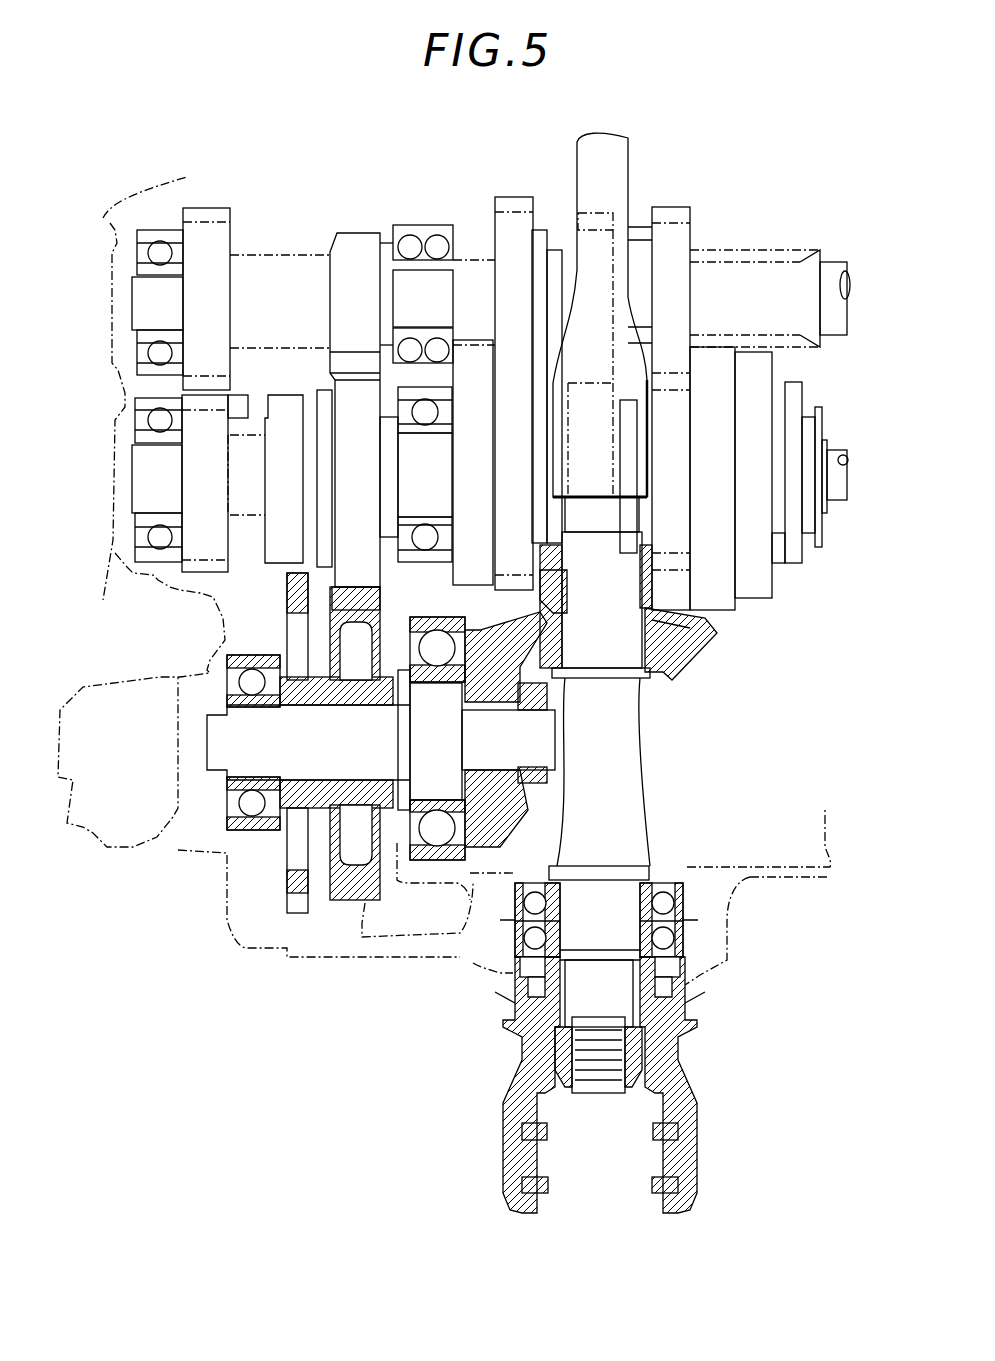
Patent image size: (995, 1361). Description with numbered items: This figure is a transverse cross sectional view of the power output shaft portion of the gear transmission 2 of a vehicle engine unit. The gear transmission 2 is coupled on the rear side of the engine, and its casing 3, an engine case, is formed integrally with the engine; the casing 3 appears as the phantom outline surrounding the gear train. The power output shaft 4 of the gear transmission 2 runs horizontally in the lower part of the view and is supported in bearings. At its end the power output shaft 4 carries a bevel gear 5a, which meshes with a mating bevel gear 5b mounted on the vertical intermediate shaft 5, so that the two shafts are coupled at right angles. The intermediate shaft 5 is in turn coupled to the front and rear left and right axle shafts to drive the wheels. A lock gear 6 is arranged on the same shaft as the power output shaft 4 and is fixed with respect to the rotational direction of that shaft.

The gear transmission 2 is at (475, 263).
The casing 3 is at (120, 563).
The power output shaft 4 is at (323, 767).
The intermediate shaft 5 is at (613, 168).
The bevel gear 5a is at (493, 843).
The bevel gear 5b is at (667, 643).
The lock gear 6 is at (297, 917).